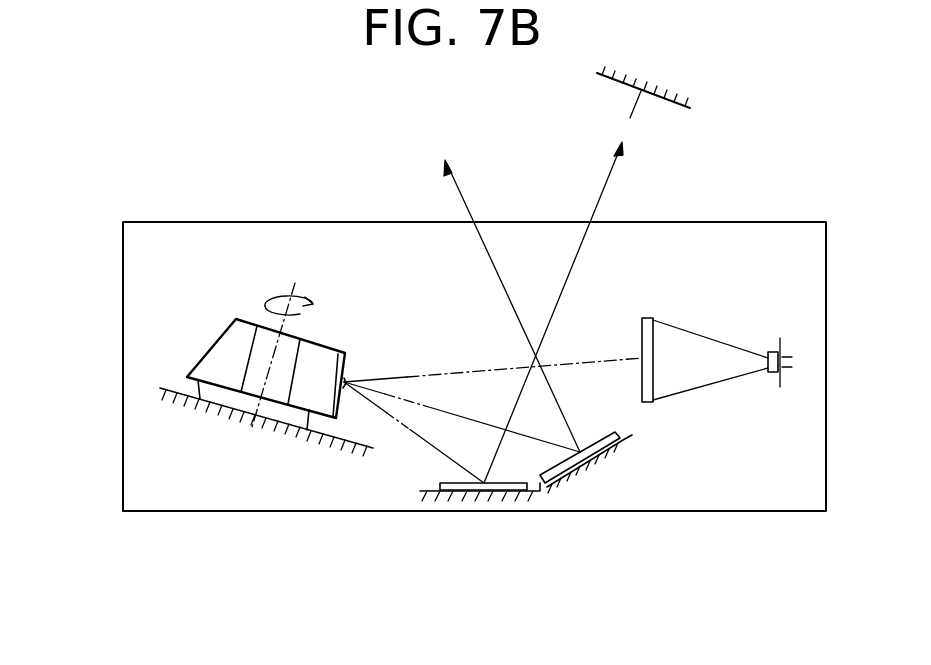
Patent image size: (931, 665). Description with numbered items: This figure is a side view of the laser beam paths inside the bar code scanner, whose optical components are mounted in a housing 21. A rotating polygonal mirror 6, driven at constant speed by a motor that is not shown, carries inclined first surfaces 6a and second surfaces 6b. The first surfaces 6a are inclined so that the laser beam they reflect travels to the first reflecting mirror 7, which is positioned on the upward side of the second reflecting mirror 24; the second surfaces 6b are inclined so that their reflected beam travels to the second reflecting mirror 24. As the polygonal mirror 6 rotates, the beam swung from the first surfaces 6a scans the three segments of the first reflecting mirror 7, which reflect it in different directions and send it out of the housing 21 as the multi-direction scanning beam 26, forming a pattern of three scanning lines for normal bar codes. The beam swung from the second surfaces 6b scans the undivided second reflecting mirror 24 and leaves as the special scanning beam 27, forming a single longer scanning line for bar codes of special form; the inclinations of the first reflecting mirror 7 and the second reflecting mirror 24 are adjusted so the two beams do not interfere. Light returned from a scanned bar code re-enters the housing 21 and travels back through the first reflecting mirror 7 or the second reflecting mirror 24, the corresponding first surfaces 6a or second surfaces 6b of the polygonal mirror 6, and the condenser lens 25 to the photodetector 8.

The polygonal mirror 6 is at (238, 332).
The first surfaces 6a is at (341, 372).
The second surfaces 6b is at (340, 397).
The first reflecting mirror 7 is at (612, 447).
The photodetector 8 is at (777, 375).
The housing 21 is at (122, 447).
The second reflecting mirror 24 is at (445, 493).
The condenser lens 25 is at (648, 318).
The multi-direction scanning beam 26 is at (463, 197).
The special scanning beam 27 is at (604, 188).